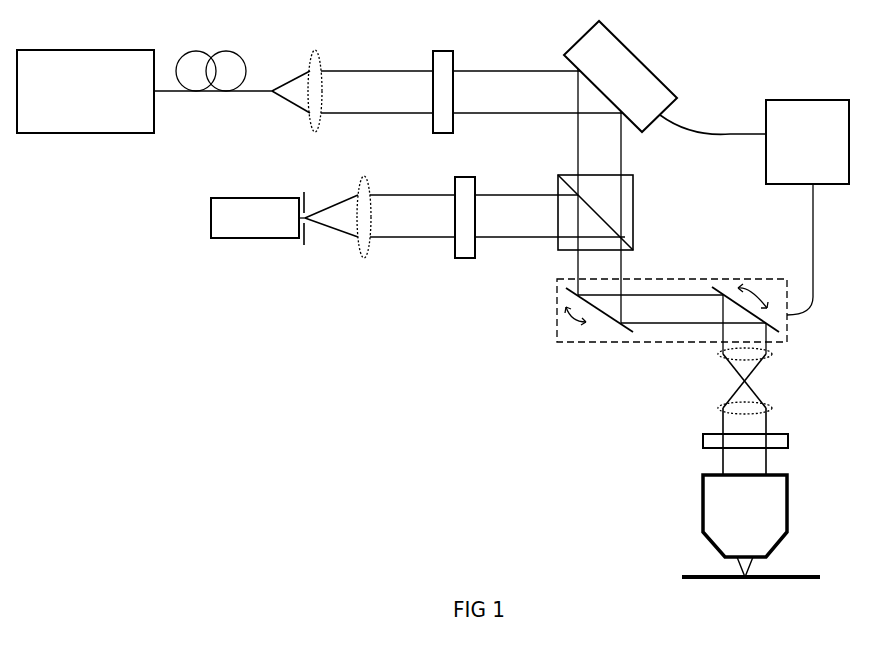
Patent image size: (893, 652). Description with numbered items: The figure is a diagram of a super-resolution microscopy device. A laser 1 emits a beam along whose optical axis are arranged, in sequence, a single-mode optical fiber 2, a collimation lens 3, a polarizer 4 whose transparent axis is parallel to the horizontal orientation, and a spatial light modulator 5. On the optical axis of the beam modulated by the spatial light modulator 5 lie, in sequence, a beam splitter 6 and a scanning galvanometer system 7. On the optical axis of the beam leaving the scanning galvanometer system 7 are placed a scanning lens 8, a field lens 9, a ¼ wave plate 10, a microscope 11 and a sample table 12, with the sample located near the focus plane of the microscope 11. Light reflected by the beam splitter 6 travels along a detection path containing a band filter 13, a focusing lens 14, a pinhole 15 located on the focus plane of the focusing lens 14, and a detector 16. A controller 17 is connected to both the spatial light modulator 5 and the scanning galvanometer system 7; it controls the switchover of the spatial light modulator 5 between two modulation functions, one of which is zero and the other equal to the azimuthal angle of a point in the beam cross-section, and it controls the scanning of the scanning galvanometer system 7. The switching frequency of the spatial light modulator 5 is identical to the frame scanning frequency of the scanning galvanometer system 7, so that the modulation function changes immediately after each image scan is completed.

The laser 1 is at (85, 91).
The single-mode optical fiber 2 is at (213, 86).
The collimation lens 3 is at (297, 94).
The polarizer 4 is at (454, 97).
The spatial light modulator 5 is at (620, 76).
The beam splitter 6 is at (606, 212).
The scanning galvanometer system 7 is at (695, 316).
The scanning lens 8 is at (753, 376).
The field lens 9 is at (753, 436).
The ¼ wave plate 10 is at (760, 442).
The microscope 11 is at (760, 526).
The sample table 12 is at (751, 565).
The band filter 13 is at (466, 233).
The focusing lens 14 is at (342, 231).
The pinhole 15 is at (304, 235).
The detector 16 is at (258, 218).
The controller 17 is at (754, 207).